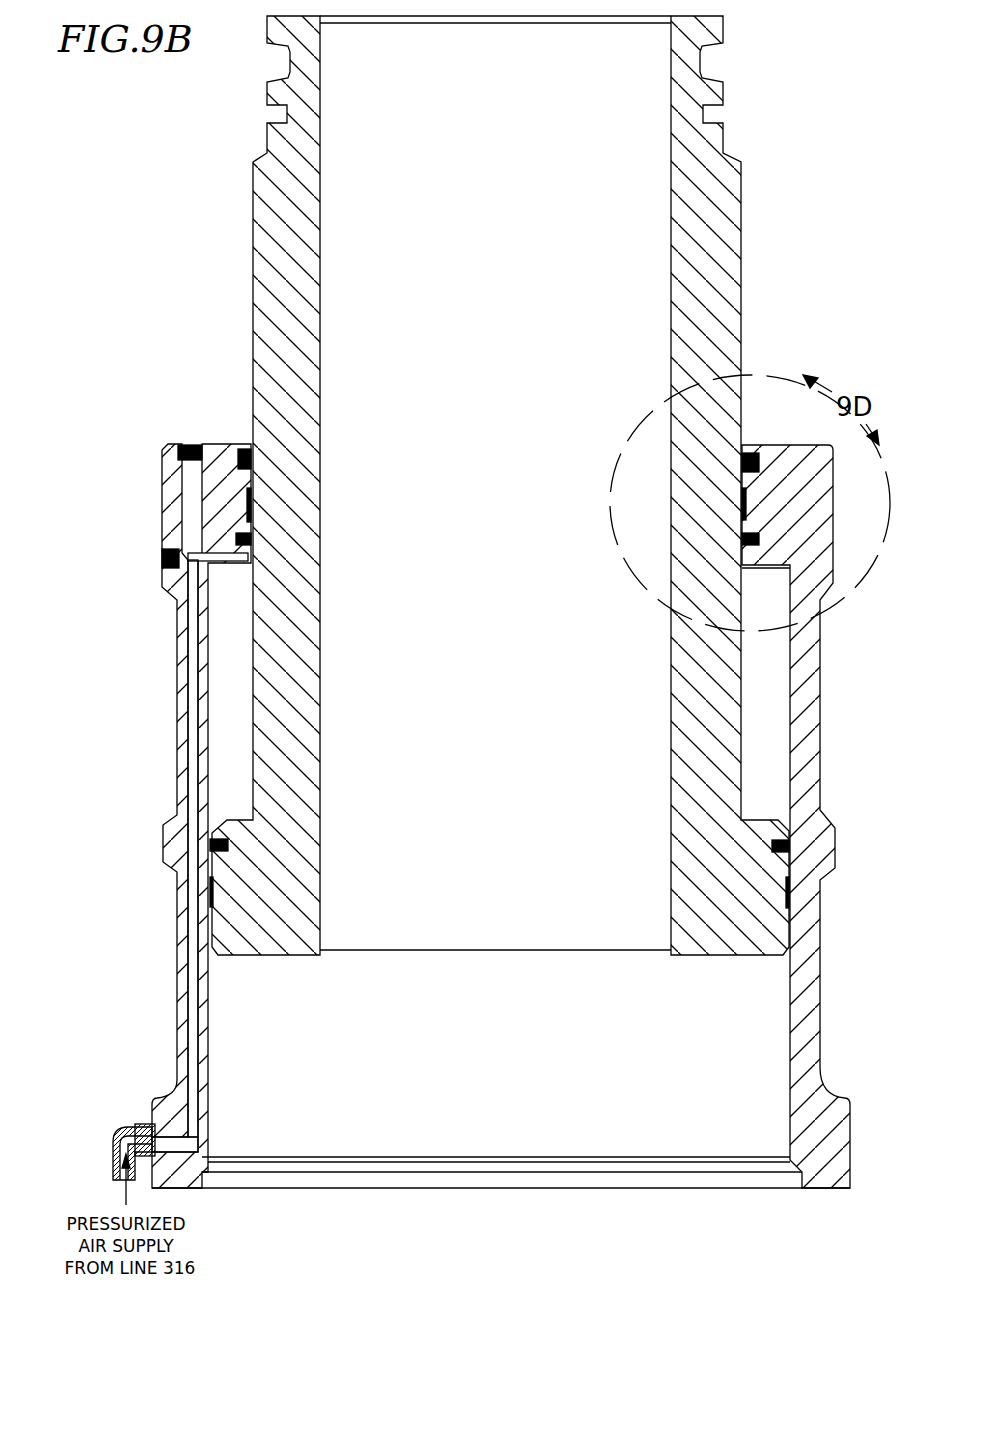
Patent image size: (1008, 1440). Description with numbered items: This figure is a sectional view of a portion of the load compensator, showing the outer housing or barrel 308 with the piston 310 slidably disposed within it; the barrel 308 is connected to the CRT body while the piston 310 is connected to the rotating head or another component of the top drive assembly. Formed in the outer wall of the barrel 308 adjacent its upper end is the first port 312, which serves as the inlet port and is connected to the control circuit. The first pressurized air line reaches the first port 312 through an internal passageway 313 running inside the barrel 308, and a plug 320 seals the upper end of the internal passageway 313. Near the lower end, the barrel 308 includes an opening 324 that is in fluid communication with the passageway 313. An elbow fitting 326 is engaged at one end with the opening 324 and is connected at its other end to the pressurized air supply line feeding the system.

The barrel 308 is at (175, 842).
The piston 310 is at (742, 212).
The first port 312 is at (212, 553).
The internal passageway 313 is at (203, 1005).
The plug 320 is at (185, 447).
The opening 324 is at (197, 1148).
The elbow fitting 326 is at (132, 1135).